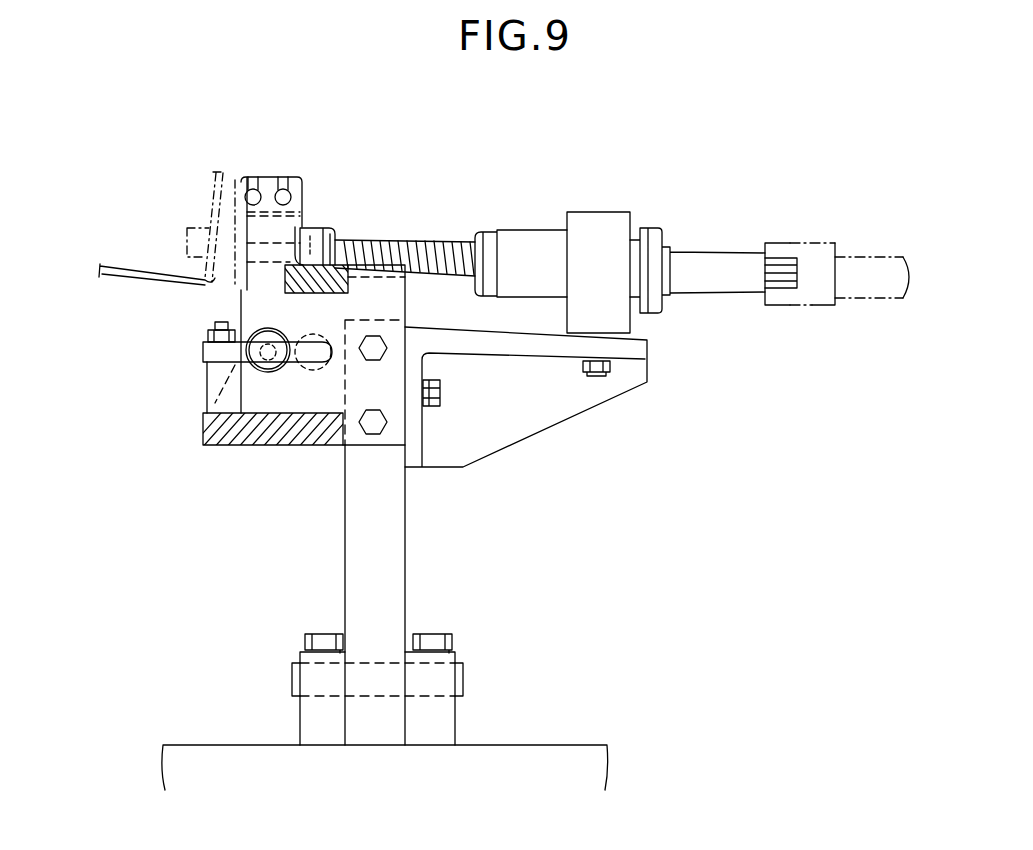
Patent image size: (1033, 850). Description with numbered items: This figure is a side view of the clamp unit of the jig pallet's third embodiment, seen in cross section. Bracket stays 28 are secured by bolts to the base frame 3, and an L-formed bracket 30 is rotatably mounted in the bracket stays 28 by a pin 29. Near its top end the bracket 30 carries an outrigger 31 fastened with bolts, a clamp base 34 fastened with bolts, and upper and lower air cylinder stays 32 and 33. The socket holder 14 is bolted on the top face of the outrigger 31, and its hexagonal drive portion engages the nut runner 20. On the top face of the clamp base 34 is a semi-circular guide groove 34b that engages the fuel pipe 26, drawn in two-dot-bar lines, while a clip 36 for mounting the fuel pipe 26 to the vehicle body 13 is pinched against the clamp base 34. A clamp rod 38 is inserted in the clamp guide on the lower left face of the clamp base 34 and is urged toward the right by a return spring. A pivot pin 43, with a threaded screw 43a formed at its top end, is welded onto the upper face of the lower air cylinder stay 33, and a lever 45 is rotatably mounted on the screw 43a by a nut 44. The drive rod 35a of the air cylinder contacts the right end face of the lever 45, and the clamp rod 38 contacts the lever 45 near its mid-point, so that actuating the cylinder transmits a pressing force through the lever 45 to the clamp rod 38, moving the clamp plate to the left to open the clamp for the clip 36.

The base frame 3 is at (555, 752).
The vehicle body 13 is at (118, 274).
The socket holder 14 is at (546, 211).
The nut runner 20 is at (816, 308).
The fuel pipe 26 is at (248, 190).
The bracket stays 28 is at (300, 713).
The pin 29 is at (463, 676).
The L-formed bracket 30 is at (393, 563).
The outrigger 31 is at (543, 417).
The upper air cylinder stay 32 is at (330, 272).
The lower air cylinder stay 33 is at (312, 428).
The clamp base 34 is at (282, 403).
The semi-circular guide groove 34b is at (290, 186).
The drive rod 35a is at (312, 370).
The clip 36 is at (302, 197).
The clamp rod 38 is at (264, 372).
The pivot pin 43 is at (207, 378).
The threaded screw 43a is at (220, 323).
The nut 44 is at (206, 336).
The lever 45 is at (203, 351).